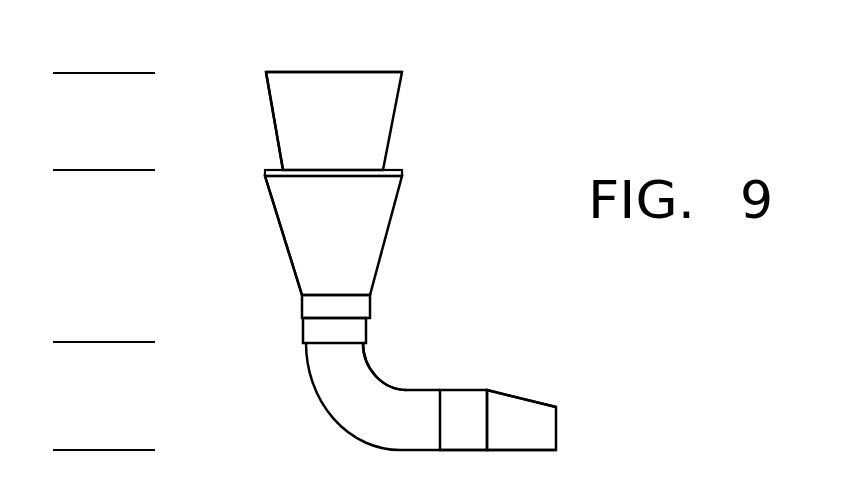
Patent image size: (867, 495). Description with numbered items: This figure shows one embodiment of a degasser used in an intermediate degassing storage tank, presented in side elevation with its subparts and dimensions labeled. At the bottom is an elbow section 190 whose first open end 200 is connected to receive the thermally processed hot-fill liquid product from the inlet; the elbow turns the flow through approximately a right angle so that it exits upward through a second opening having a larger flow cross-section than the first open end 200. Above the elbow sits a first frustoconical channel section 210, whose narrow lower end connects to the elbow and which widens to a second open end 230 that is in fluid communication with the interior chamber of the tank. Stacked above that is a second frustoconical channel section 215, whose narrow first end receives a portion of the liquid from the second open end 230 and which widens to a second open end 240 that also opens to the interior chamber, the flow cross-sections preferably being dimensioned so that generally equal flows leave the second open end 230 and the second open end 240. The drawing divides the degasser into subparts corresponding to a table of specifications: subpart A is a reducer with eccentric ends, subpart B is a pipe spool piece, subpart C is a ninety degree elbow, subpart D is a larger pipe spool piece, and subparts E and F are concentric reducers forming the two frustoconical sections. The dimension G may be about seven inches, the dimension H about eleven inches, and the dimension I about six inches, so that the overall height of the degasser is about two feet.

The elbow section 190 is at (334, 430).
The first open end 200 is at (558, 428).
The first frustoconical channel section 210 is at (389, 227).
The second frustoconical channel section 215 is at (396, 126).
The second open end 230 is at (396, 172).
The second open end 240 is at (372, 71).
The subpart A is at (516, 392).
The subpart B is at (461, 390).
The subpart C is at (381, 375).
The subpart D is at (301, 320).
The subpart E is at (288, 243).
The subpart F is at (274, 116).
The dimension G is at (103, 343).
The dimension H is at (103, 171).
The dimension I is at (103, 74).